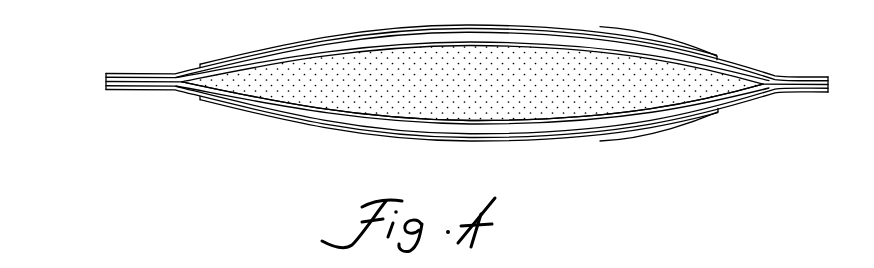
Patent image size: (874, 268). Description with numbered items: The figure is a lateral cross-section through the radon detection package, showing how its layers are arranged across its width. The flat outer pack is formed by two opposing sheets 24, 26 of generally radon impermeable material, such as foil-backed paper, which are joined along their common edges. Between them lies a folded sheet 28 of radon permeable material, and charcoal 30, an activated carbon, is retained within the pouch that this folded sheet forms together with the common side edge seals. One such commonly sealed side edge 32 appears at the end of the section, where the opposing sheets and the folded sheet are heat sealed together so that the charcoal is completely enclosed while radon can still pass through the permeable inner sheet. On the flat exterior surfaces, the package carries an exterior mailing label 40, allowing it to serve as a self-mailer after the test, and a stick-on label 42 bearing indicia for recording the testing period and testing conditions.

The opposing sheet 24 is at (717, 62).
The opposing sheet 26 is at (728, 92).
The folded sheet 28 is at (568, 121).
The charcoal 30 is at (465, 53).
The side edge 32 is at (97, 88).
The exterior mailing label 40 is at (217, 60).
The stick-on label 42 is at (223, 103).